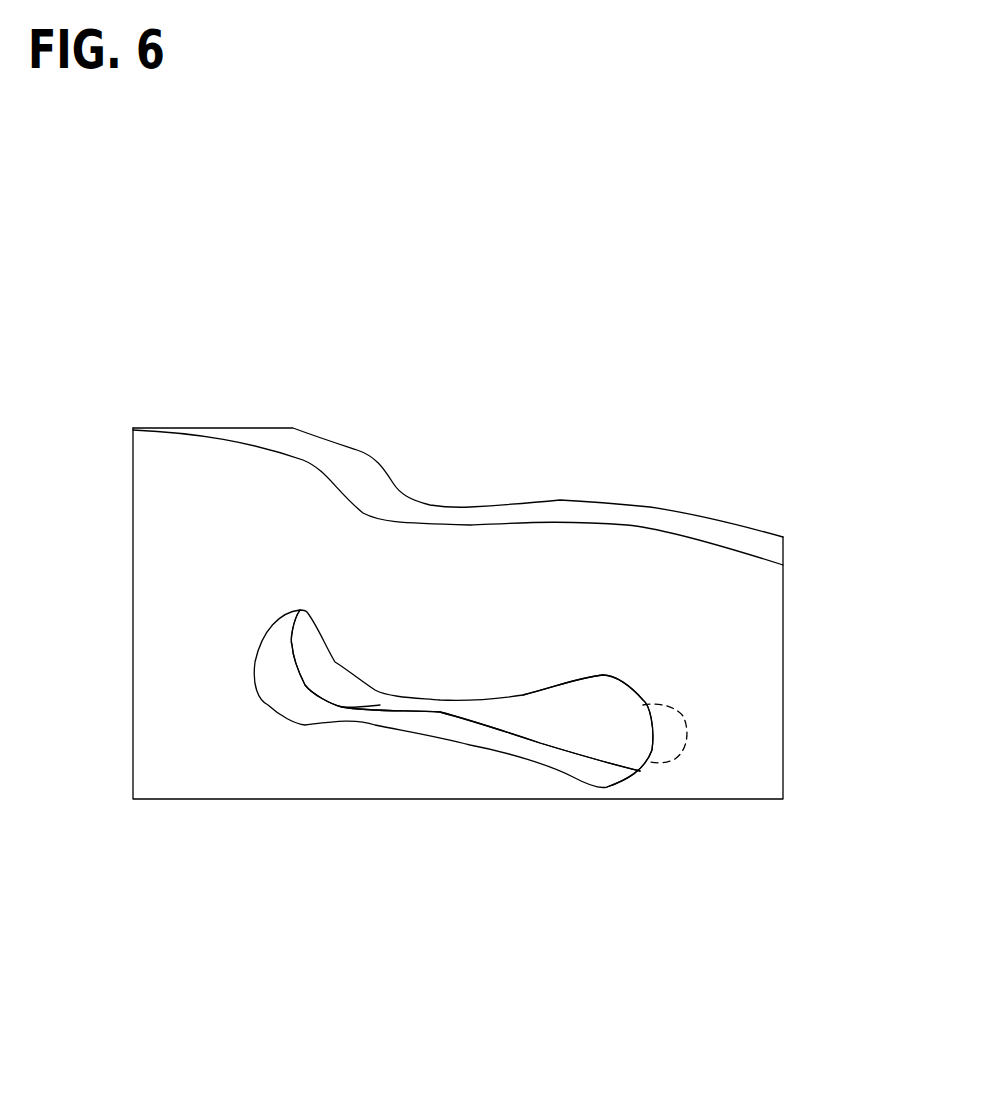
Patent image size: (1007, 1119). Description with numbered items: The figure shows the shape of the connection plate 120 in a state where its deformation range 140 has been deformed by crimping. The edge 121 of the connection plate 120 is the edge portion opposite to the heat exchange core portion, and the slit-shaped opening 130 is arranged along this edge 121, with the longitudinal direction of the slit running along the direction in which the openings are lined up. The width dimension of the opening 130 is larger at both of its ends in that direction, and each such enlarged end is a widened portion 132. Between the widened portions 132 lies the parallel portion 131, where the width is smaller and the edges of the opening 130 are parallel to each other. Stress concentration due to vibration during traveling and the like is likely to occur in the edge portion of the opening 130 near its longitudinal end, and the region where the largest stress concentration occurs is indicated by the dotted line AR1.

The connection plate 120 is at (755, 642).
The edge 121 is at (630, 515).
The deformation range 140 is at (505, 553).
The opening 130 is at (515, 713).
The parallel portion 131 is at (467, 712).
The widened portion 132 is at (289, 691).
The stress concentration region AR1 is at (688, 730).